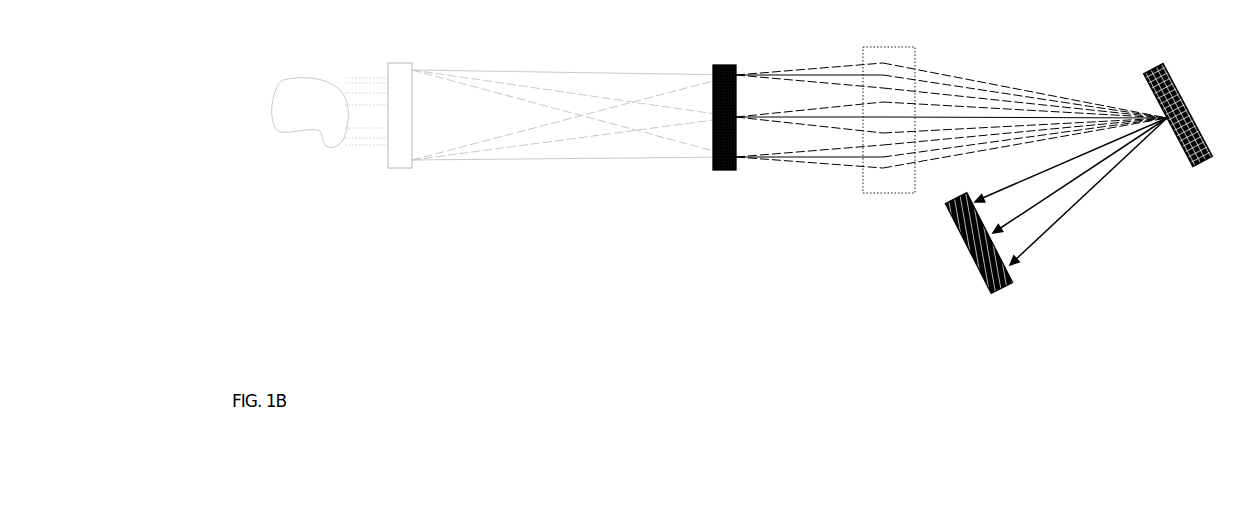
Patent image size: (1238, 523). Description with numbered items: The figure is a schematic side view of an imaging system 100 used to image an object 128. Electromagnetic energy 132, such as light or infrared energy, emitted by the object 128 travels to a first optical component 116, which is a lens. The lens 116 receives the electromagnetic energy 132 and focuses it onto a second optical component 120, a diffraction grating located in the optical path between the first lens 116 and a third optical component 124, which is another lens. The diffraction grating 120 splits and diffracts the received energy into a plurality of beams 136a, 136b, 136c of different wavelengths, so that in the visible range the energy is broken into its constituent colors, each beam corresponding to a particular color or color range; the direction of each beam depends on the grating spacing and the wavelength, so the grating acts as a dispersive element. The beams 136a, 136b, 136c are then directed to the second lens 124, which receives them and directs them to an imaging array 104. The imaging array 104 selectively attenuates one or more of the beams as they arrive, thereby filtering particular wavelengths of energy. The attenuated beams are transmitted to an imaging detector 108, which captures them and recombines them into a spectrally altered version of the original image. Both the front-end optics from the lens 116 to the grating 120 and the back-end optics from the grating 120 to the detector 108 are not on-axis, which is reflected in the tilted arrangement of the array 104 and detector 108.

The imaging system 100 is at (728, 174).
The imaging array 104 is at (1152, 73).
The imaging detector 108 is at (997, 290).
The first optical component 116 is at (403, 65).
The second optical component 120 is at (718, 64).
The third optical component 124 is at (890, 47).
The object 128 is at (280, 85).
The electromagnetic energy 132 is at (350, 76).
The beam 136a is at (805, 70).
The beam 136b is at (805, 130).
The beam 136c is at (841, 167).